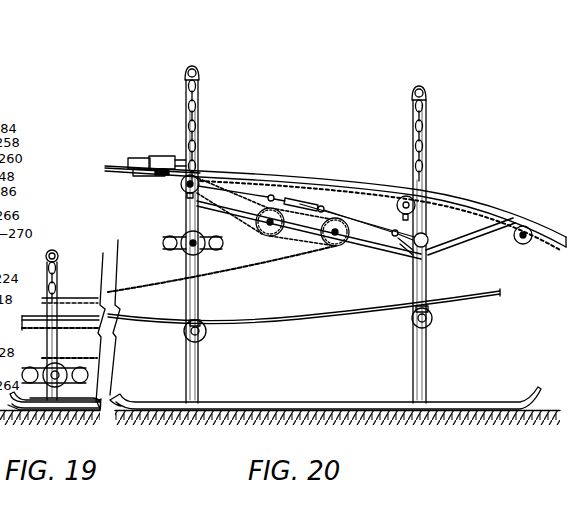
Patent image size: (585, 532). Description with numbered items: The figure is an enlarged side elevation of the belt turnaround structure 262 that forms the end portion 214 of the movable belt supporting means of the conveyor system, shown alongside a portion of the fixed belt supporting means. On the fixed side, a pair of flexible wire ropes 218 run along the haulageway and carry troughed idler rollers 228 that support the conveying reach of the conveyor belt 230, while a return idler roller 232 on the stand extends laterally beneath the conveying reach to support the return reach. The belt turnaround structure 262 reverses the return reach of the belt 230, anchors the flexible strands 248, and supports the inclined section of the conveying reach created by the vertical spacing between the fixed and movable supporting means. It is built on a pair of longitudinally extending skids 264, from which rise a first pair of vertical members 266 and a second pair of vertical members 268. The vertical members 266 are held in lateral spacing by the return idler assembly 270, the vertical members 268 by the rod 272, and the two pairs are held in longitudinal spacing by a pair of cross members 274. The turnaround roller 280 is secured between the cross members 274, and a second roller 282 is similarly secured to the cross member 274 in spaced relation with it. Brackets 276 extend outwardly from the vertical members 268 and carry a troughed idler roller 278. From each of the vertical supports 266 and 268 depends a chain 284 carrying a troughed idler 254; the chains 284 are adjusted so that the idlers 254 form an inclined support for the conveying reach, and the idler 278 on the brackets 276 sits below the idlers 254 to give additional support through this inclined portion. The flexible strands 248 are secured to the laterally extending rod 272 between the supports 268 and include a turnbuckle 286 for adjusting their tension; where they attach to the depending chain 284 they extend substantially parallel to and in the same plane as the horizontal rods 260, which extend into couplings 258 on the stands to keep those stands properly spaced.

In FIG. 20, the end portion 214 is at (300, 83).
In FIG. 19, the flexible wire ropes 218 is at (58, 300).
In FIG. 20, the flexible wire ropes 218 is at (262, 316).
In FIG. 19, the troughed idler rollers 228 is at (55, 375).
In FIG. 20, the troughed idler rollers 228 is at (206, 333).
In FIG. 20, the conveyor belt 230 is at (266, 171).
In FIG. 19, the return idler roller 232 is at (75, 394).
In FIG. 20, the flexible strands 248 is at (114, 165).
In FIG. 20, the troughed idlers 254 is at (184, 194).
In FIG. 20, the couplings 258 is at (152, 177).
In FIG. 20, the horizontal rods 260 is at (138, 158).
In FIG. 20, the belt turnaround structure 262 is at (338, 109).
In FIG. 19, the skids 264 is at (55, 400).
In FIG. 20, the skids 264 is at (292, 400).
In FIG. 20, the first pair of vertical members 266 is at (199, 110).
In FIG. 20, the second pair of vertical members 268 is at (428, 158).
In FIG. 20, the return idler assembly 270 is at (181, 250).
In FIG. 20, the rod 272 is at (428, 236).
In FIG. 20, the cross members 274 is at (394, 248).
In FIG. 20, the brackets 276 is at (478, 240).
In FIG. 20, the troughed idler roller 278 is at (528, 246).
In FIG. 20, the turnaround roller 280 is at (335, 247).
In FIG. 20, the second roller 282 is at (270, 238).
In FIG. 20, the chain 284 is at (200, 126).
In FIG. 20, the turnbuckle 286 is at (296, 201).